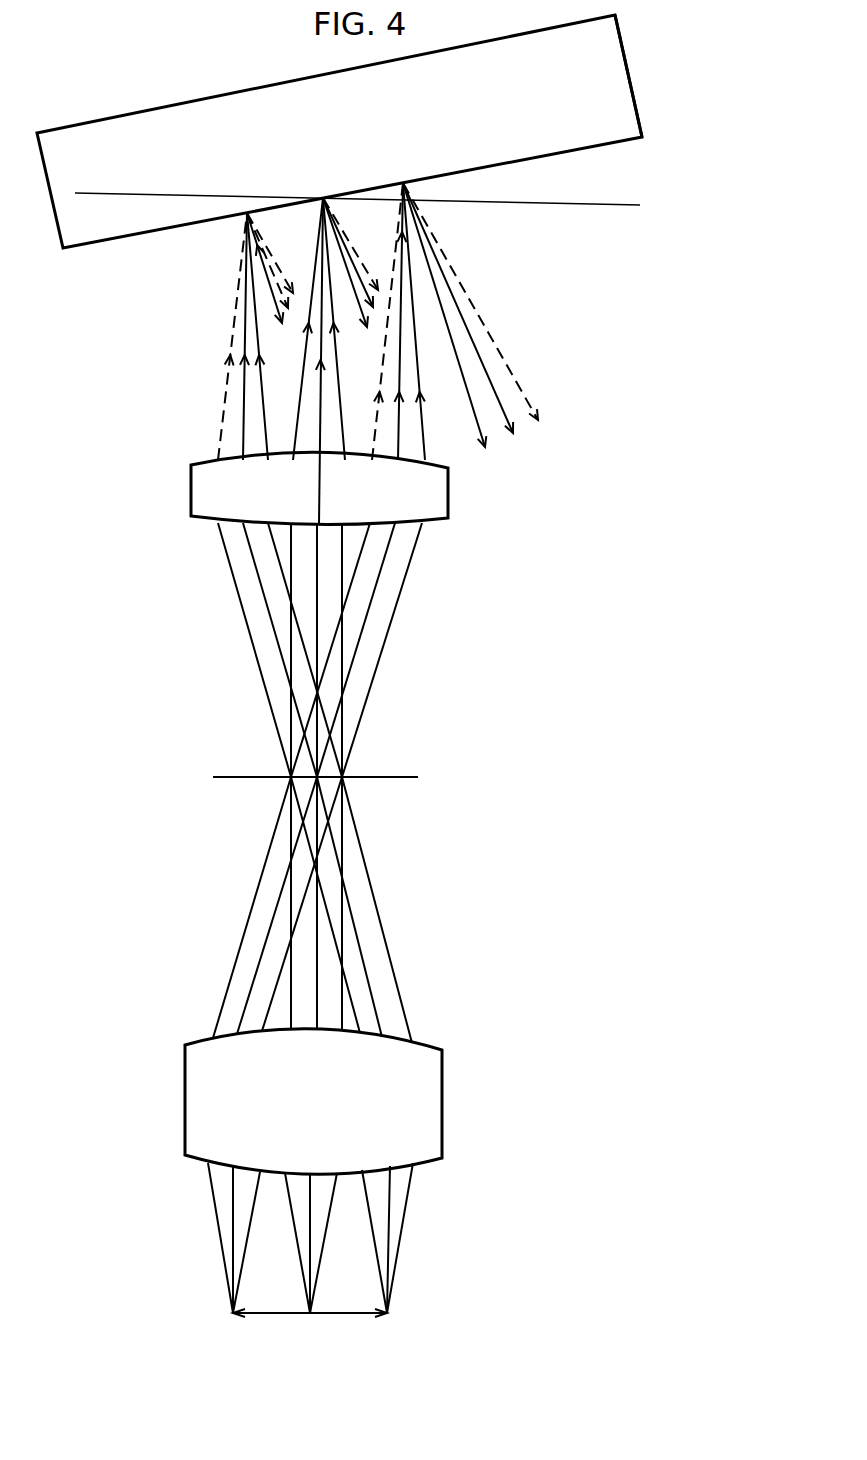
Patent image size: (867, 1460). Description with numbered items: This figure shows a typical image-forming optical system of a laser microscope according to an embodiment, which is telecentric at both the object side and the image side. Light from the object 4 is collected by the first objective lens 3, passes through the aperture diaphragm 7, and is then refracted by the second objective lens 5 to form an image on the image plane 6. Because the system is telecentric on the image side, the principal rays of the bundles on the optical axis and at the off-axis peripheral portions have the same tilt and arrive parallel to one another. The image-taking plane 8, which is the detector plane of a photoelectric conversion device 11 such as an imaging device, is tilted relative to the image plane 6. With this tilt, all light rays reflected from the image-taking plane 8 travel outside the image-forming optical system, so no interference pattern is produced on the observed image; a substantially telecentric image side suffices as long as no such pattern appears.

The photoelectric conversion device 11 is at (567, 19).
The image-taking plane 8 is at (645, 135).
The image plane 6 is at (640, 205).
The second objective lens 5 is at (448, 490).
The aperture diaphragm 7 is at (400, 777).
The first objective lens 3 is at (442, 1100).
The object 4 is at (387, 1313).